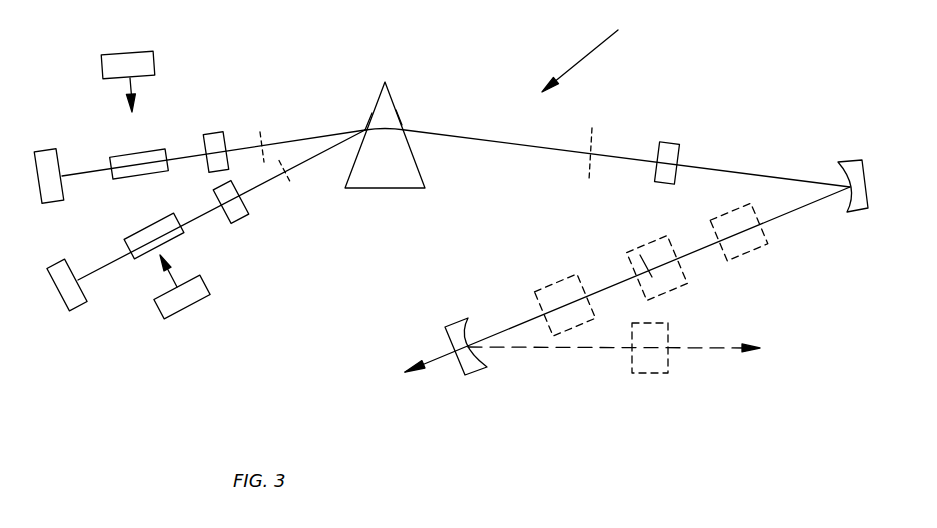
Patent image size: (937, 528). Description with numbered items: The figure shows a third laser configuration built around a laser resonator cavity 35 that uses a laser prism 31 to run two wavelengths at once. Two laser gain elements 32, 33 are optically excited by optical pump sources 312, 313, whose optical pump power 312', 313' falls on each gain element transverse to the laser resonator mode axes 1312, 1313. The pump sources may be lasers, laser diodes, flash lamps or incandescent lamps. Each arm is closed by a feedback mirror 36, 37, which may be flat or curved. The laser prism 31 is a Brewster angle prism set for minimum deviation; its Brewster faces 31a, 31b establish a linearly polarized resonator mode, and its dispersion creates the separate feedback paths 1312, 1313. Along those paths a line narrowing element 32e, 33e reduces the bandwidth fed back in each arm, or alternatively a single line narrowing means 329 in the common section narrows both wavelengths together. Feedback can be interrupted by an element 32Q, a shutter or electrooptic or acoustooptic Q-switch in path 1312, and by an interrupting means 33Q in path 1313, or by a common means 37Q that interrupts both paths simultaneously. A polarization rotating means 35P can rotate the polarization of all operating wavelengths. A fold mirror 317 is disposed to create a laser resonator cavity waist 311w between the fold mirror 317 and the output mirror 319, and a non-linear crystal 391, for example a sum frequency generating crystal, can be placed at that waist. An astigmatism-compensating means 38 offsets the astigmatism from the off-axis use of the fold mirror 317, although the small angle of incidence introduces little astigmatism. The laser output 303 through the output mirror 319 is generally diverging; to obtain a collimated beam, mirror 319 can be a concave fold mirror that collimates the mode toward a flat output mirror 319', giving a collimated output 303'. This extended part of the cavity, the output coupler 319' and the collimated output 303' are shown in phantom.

The laser prism 31 is at (385, 110).
The Brewster face of prism 31a is at (373, 113).
The Brewster face of prism 31b is at (401, 120).
The laser gain element 32 is at (137, 151).
The laser gain element 33 is at (144, 231).
The laser resonator cavity 35 is at (594, 49).
The polarization rotating means 35P is at (753, 260).
The feedback mirror 36 is at (44, 150).
The feedback mirror 37 is at (55, 260).
The interrupting means 37Q is at (667, 141).
The astigmatism-compensating means 38 is at (573, 275).
The laser output 303 is at (603, 288).
The collimated laser output 303' is at (646, 351).
The laser resonator cavity waist 311w is at (647, 263).
The optical pump source 312 is at (128, 47).
The optical pump power 312' is at (168, 92).
The optical pump source 313 is at (156, 301).
The optical pump power 313' is at (222, 283).
The fold mirror 317 is at (852, 160).
The output mirror 319 is at (472, 369).
The flat output mirror 319' is at (656, 373).
The line narrowing means 329 is at (592, 133).
The interrupting element 32Q is at (211, 128).
The line narrowing element 32e is at (262, 134).
The interrupting means 33Q is at (248, 216).
The line narrowing element 33e is at (294, 174).
The non-linear crystal 391 is at (670, 290).
The laser resonator mode axis 1312 is at (179, 158).
The laser resonator mode axis 1313 is at (192, 222).